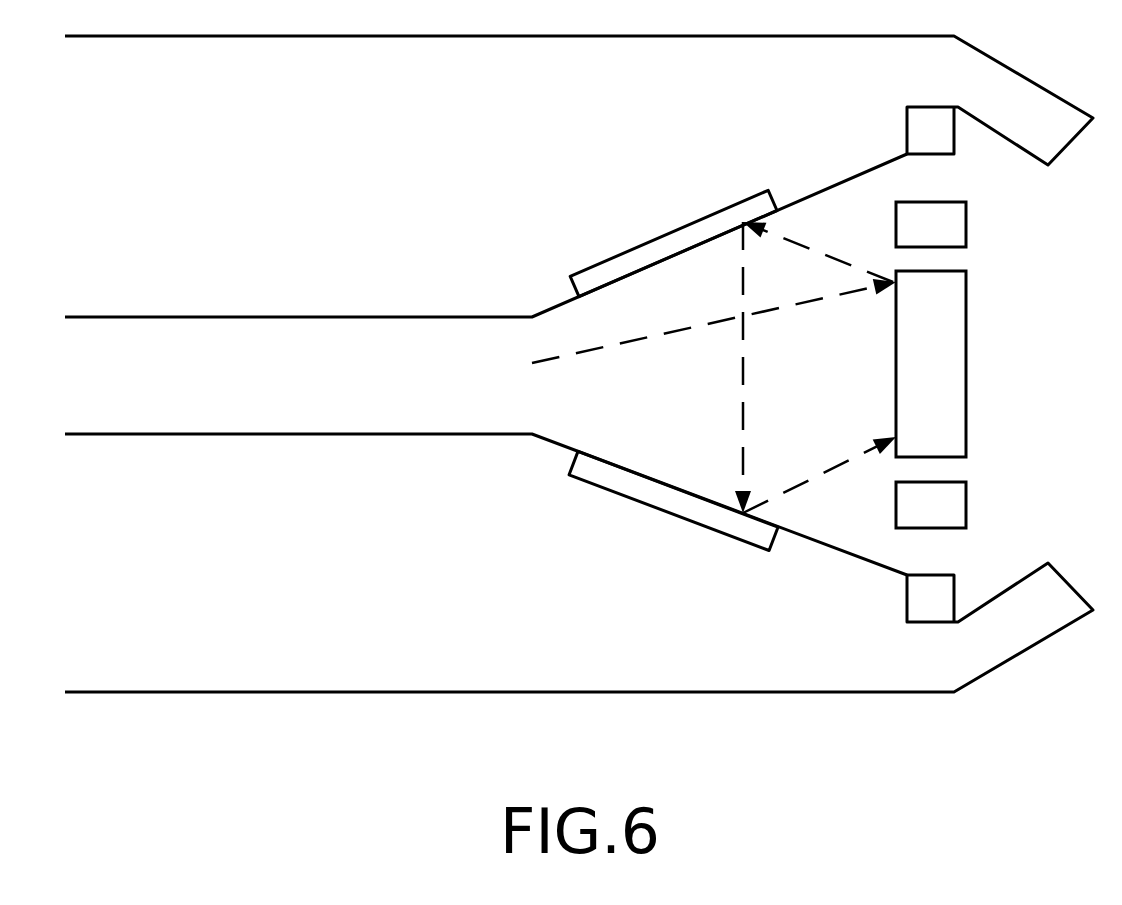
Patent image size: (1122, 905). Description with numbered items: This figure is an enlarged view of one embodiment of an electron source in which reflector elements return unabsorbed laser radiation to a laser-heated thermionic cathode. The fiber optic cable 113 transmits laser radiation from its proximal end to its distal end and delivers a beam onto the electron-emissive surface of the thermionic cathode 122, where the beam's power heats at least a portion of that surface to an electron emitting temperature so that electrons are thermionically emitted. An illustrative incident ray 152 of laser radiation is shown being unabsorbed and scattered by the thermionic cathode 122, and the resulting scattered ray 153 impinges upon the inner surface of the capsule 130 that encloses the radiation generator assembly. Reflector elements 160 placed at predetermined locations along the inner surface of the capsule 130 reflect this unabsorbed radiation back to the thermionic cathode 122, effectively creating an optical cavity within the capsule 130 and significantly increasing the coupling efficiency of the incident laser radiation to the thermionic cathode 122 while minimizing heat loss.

The capsule 130 is at (462, 83).
The fiber optic cable 113 is at (252, 362).
The reflector elements 160 is at (748, 193).
The thermionic cathode 122 is at (966, 363).
The incident ray 152 is at (697, 327).
The scattered ray 153 is at (805, 247).